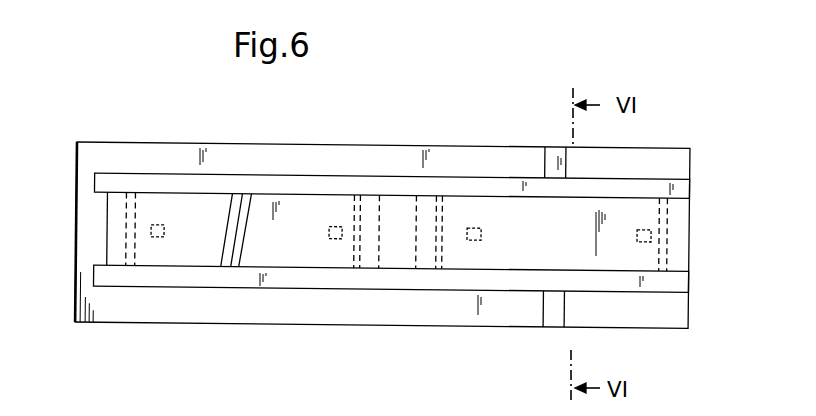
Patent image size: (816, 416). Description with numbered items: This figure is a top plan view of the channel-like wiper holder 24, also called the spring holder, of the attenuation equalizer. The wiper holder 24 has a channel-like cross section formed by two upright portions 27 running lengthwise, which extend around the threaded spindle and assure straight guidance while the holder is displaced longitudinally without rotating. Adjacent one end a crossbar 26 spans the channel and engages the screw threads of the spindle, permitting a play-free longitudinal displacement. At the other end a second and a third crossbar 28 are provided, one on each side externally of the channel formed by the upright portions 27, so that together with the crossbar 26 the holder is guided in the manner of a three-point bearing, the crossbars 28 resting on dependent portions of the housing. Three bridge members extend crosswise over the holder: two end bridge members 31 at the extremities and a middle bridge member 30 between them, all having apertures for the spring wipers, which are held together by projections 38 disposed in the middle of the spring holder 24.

The wiper holder 24 is at (207, 313).
The crossbar 26 is at (240, 238).
The upright portions 27 is at (117, 176).
The crossbars 28 is at (545, 156).
The bridge member 30 is at (393, 210).
The bridge members 31 is at (112, 220).
The projections 38 is at (166, 230).